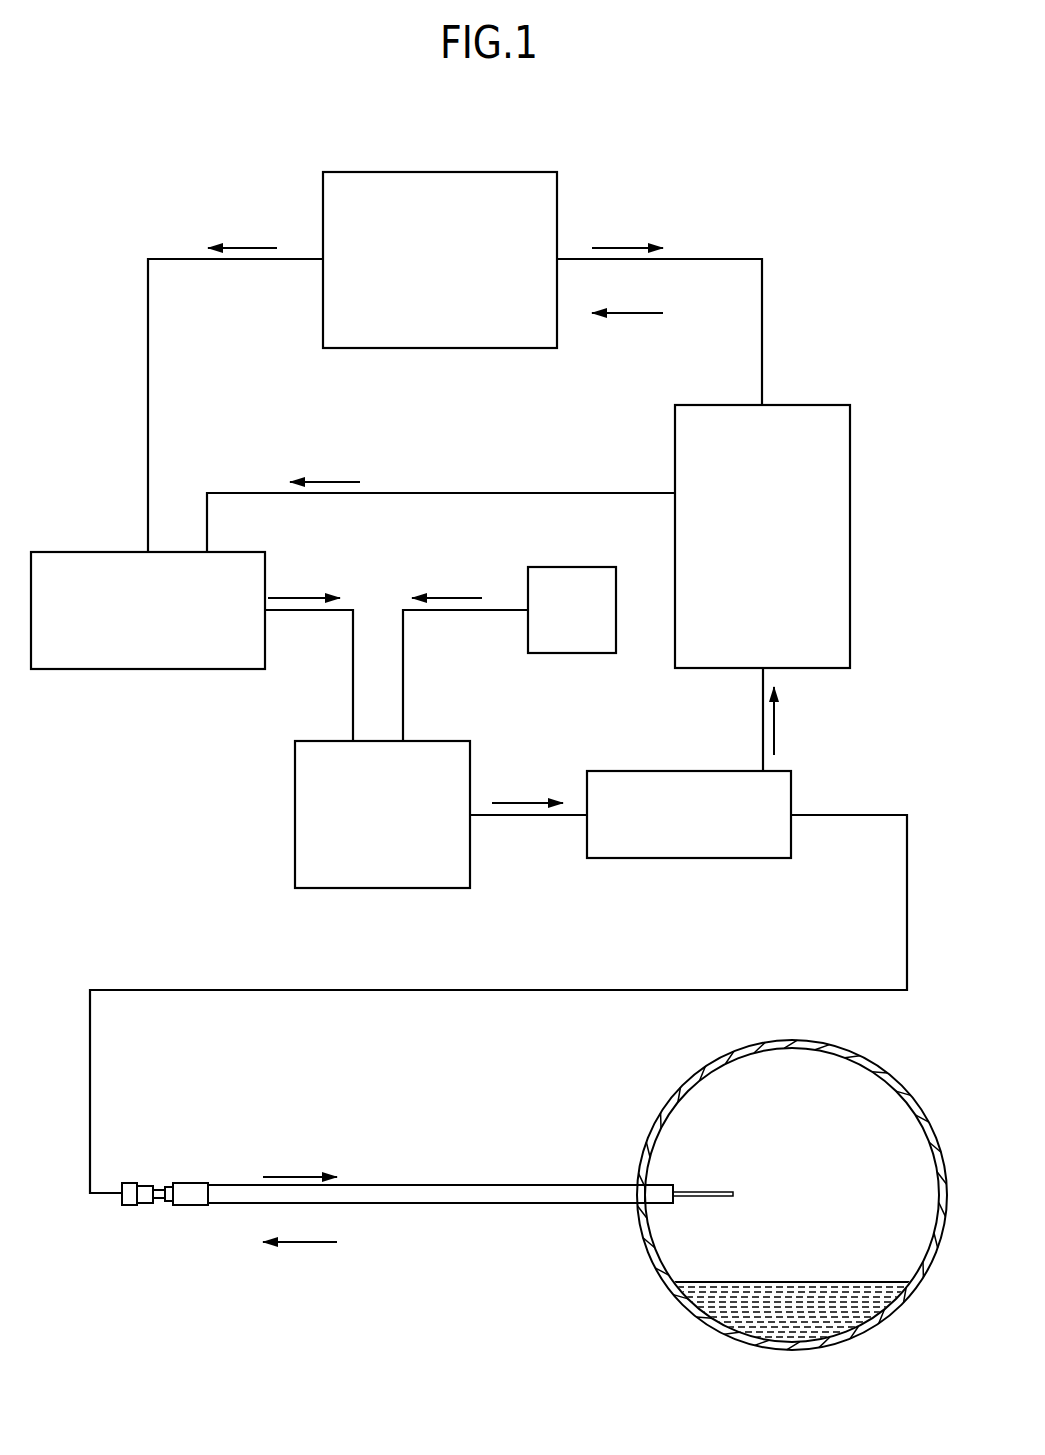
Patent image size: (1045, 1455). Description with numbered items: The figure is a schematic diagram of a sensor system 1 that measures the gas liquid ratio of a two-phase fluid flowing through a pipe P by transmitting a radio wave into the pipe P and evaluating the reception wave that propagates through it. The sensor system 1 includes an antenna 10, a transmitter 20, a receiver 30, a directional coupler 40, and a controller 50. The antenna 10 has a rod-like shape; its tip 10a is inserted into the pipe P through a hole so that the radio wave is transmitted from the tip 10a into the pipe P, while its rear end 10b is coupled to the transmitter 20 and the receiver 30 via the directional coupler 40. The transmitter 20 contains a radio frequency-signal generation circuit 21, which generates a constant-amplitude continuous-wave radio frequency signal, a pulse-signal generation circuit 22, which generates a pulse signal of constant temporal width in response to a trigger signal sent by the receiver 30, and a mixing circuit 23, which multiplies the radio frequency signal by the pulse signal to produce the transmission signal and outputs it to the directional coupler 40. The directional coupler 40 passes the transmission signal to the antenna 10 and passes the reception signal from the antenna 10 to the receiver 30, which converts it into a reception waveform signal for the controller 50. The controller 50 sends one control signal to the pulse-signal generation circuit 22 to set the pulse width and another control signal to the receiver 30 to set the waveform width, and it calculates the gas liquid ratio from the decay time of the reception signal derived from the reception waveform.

The sensor system 1 is at (846, 182).
The antenna 10 is at (428, 1185).
The tip 10a is at (710, 1190).
The rear end 10b is at (113, 1206).
The transmitter 20 is at (114, 396).
The radio frequency-signal generation circuit 21 is at (556, 567).
The pulse-signal generation circuit 22 is at (55, 552).
The mixing circuit 23 is at (428, 741).
The receiver 30 is at (792, 405).
The directional coupler 40 is at (603, 771).
The controller 50 is at (494, 172).
The pipe P is at (850, 1051).